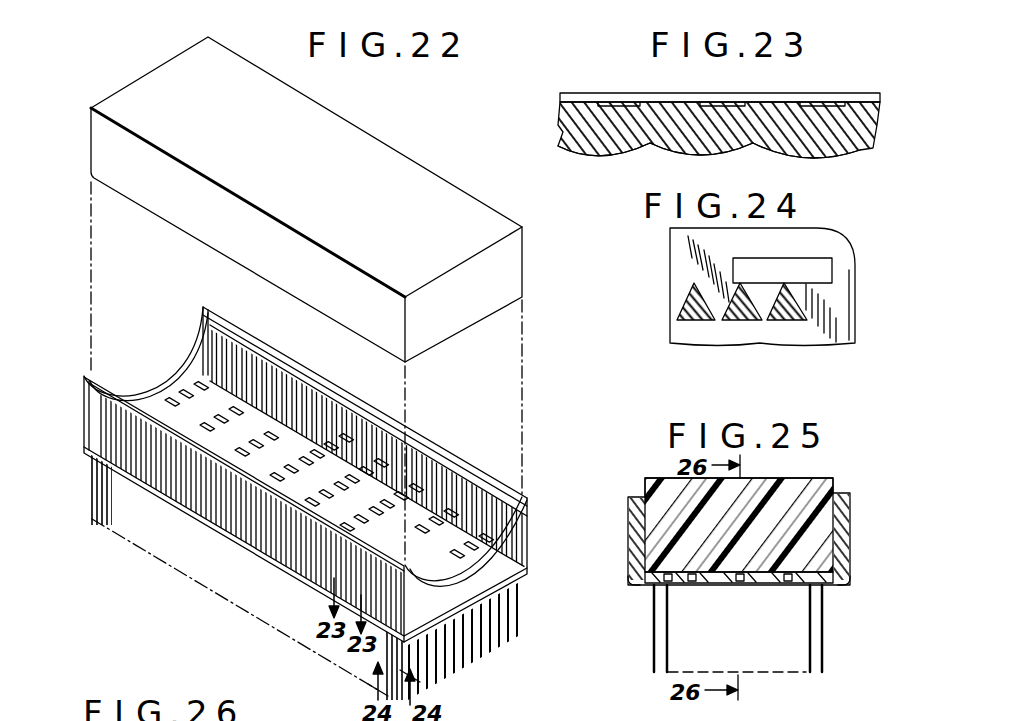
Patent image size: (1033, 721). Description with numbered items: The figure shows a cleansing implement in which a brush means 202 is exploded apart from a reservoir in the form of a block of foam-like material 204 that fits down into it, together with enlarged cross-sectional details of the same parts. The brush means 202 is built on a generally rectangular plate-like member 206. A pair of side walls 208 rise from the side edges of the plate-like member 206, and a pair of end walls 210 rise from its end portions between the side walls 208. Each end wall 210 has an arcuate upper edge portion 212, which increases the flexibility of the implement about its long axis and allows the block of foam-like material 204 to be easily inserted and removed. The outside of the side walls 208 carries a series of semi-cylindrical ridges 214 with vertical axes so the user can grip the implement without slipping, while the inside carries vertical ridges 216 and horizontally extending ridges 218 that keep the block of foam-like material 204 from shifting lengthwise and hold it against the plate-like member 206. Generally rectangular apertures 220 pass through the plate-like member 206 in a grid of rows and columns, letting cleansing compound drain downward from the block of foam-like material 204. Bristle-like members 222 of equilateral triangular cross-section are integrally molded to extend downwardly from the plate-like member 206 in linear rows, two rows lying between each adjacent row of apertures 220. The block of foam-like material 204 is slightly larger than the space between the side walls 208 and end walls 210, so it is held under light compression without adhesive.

In FIG. 22, the brush means 202 is at (538, 510).
In FIG. 22, the block of foam-like material 204 is at (388, 165).
In FIG. 25, the block of foam-like material 204 is at (810, 488).
In FIG. 22, the plate-like member 206 is at (485, 553).
In FIG. 24, the plate-like member 206 is at (838, 305).
In FIG. 25, the plate-like member 206 is at (800, 584).
In FIG. 22, the side walls 208 is at (86, 418).
In FIG. 23, the side walls 208 is at (562, 131).
In FIG. 25, the side walls 208 is at (635, 497).
In FIG. 22, the end walls 210 is at (187, 357).
In FIG. 22, the arcuate upper edge portions 212 is at (172, 372).
In FIG. 22, the semi-cylindrical ridges 214 is at (207, 515).
In FIG. 23, the semi-cylindrical ridges 214 is at (608, 160).
In FIG. 25, the semi-cylindrical ridges 214 is at (622, 583).
In FIG. 22, the vertical ridges 216 is at (483, 480).
In FIG. 23, the vertical ridges 216 is at (617, 101).
In FIG. 23, the horizontal ridges 218 is at (700, 101).
In FIG. 22, the rectangular apertures 220 is at (330, 423).
In FIG. 24, the rectangular apertures 220 is at (830, 260).
In FIG. 25, the rectangular apertures 220 is at (736, 586).
In FIG. 22, the bristle-like members 222 is at (522, 616).
In FIG. 24, the bristle-like members 222 is at (680, 313).
In FIG. 25, the bristle-like members 222 is at (808, 652).